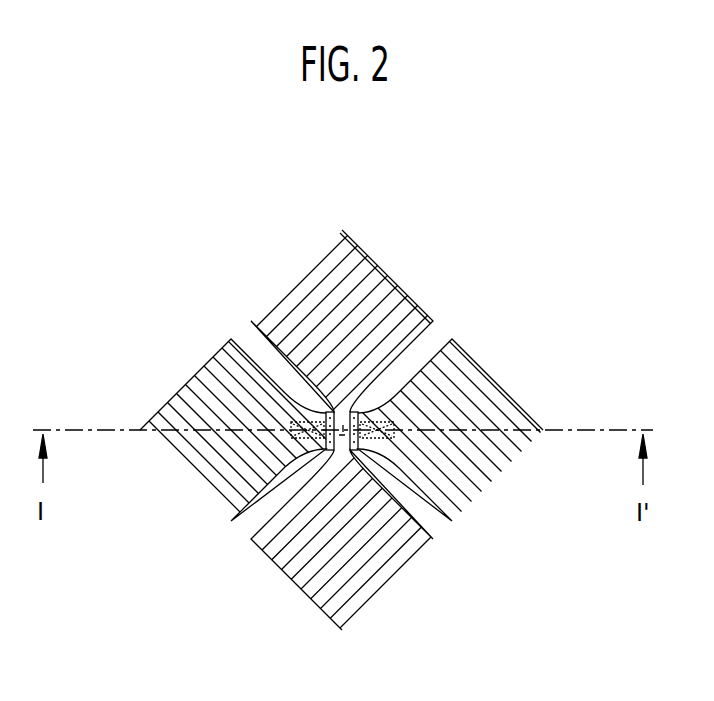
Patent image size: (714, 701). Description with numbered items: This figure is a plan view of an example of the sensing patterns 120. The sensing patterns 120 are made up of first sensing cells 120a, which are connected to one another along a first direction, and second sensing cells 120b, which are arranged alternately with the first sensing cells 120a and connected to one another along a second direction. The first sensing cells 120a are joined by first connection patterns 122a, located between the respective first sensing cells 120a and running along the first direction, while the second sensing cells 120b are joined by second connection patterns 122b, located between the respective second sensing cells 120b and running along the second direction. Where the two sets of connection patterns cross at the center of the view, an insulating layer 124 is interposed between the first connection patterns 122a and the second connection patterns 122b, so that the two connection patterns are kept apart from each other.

The sensing patterns 120 is at (537, 331).
The first sensing cells 120a is at (495, 397).
The second sensing cells 120b is at (368, 284).
The first connection patterns 122a is at (358, 448).
The second connection patterns 122b is at (330, 411).
The insulating layer 124 is at (343, 425).